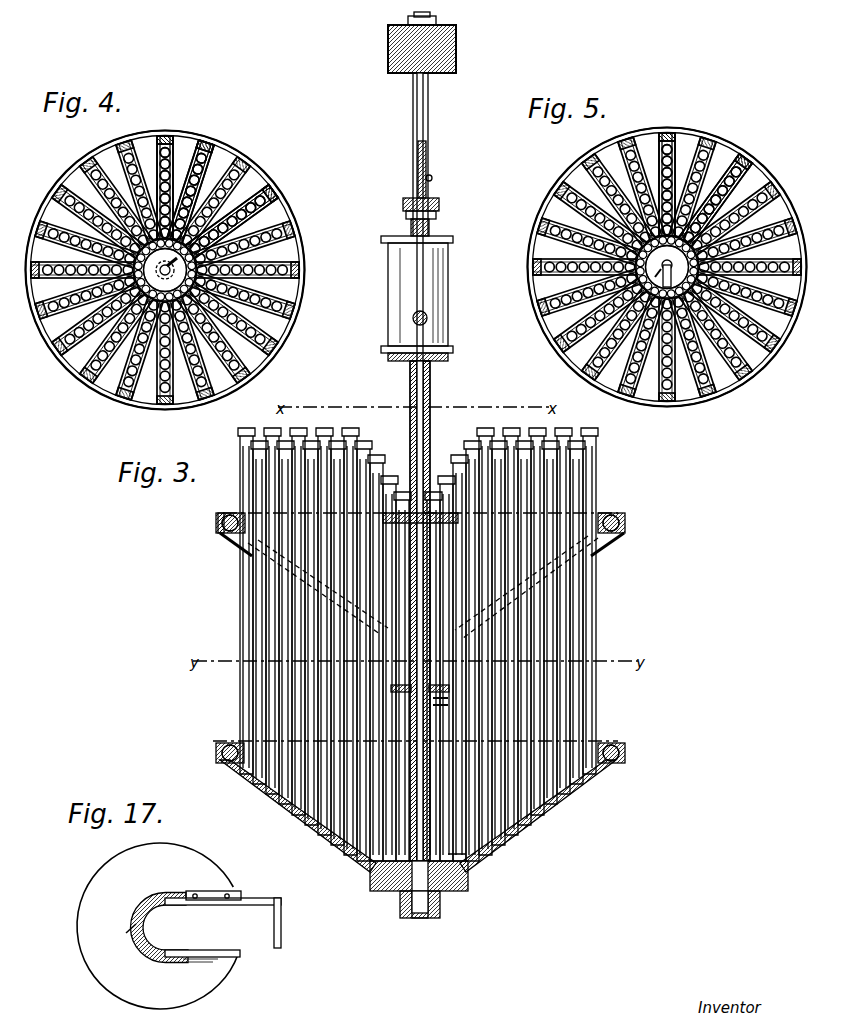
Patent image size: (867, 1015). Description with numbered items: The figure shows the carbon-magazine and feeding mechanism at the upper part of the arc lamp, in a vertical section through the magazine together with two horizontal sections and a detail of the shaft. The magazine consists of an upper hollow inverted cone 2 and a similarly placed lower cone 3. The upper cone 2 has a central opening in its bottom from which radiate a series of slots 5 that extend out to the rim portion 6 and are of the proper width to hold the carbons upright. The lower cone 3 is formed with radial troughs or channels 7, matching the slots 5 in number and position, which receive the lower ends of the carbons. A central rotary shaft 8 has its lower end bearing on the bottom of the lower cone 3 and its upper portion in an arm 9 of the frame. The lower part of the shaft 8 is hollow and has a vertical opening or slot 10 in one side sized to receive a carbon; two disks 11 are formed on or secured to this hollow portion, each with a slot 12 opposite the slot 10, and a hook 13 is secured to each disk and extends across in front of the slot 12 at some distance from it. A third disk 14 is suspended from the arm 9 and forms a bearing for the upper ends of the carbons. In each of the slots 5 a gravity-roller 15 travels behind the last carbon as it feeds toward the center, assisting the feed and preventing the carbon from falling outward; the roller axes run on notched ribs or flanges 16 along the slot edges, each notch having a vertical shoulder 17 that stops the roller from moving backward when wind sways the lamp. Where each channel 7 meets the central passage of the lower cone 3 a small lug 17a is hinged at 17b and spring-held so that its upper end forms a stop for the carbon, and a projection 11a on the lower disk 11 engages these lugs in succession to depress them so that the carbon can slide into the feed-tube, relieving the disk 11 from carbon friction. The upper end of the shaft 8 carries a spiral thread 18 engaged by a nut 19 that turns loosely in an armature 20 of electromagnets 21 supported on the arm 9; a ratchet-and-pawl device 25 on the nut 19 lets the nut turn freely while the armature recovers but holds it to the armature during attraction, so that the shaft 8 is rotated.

In FIG. 4, the upper hollow inverted cone 2 is at (165, 270).
In FIG. 3, the upper hollow inverted cone 2 is at (618, 510).
In FIG. 5, the lower cone 3 is at (667, 266).
In FIG. 3, the lower cone 3 is at (622, 738).
In FIG. 3, the slots 5 is at (226, 530).
In FIG. 3, the rim portion 6 is at (208, 515).
In FIG. 5, the radial troughs or channels 7 is at (700, 170).
In FIG. 3, the radial troughs or channels 7 is at (242, 770).
In FIG. 4, the central rotary shaft 8 is at (156, 265).
In FIG. 5, the central rotary shaft 8 is at (651, 266).
In FIG. 3, the central rotary shaft 8 is at (420, 137).
In FIG. 17, the central rotary shaft 8 is at (123, 938).
In FIG. 3, the arm 9 is at (424, 352).
In FIG. 5, the vertical opening or slot 10 is at (665, 257).
In FIG. 3, the vertical opening or slot 10 is at (440, 698).
In FIG. 17, the vertical opening or slot 10 is at (160, 928).
In FIG. 5, the disks 11 is at (667, 263).
In FIG. 3, the disks 11 is at (383, 681).
In FIG. 17, the disks 11 is at (157, 926).
In FIG. 3, the projection 11a is at (460, 860).
In FIG. 5, the slot 12 is at (638, 266).
In FIG. 3, the slot 12 is at (440, 690).
In FIG. 17, the slot 12 is at (223, 926).
In FIG. 3, the hook 13 is at (440, 680).
In FIG. 17, the hook 13 is at (264, 918).
In FIG. 4, the third disk 14 is at (165, 267).
In FIG. 4, the gravity-roller 15 is at (200, 142).
In FIG. 5, the gravity-roller 15 is at (670, 126).
In FIG. 3, the gravity-roller 15 is at (244, 556).
In FIG. 4, the notched ribs or flanges 16 is at (208, 214).
In FIG. 3, the notched ribs or flanges 16 is at (520, 582).
In FIG. 4, the vertical shoulder 17 is at (160, 170).
In FIG. 3, the vertical shoulder 17 is at (520, 574).
In FIG. 3, the lug 17a is at (450, 880).
In FIG. 3, the hinge 17b is at (432, 896).
In FIG. 3, the spiral thread 18 is at (419, 162).
In FIG. 3, the nut 19 is at (422, 214).
In FIG. 3, the armature 20 is at (430, 206).
In FIG. 3, the electromagnets 21 is at (441, 258).
In FIG. 3, the ratchet-and-pawl device 25 is at (432, 196).